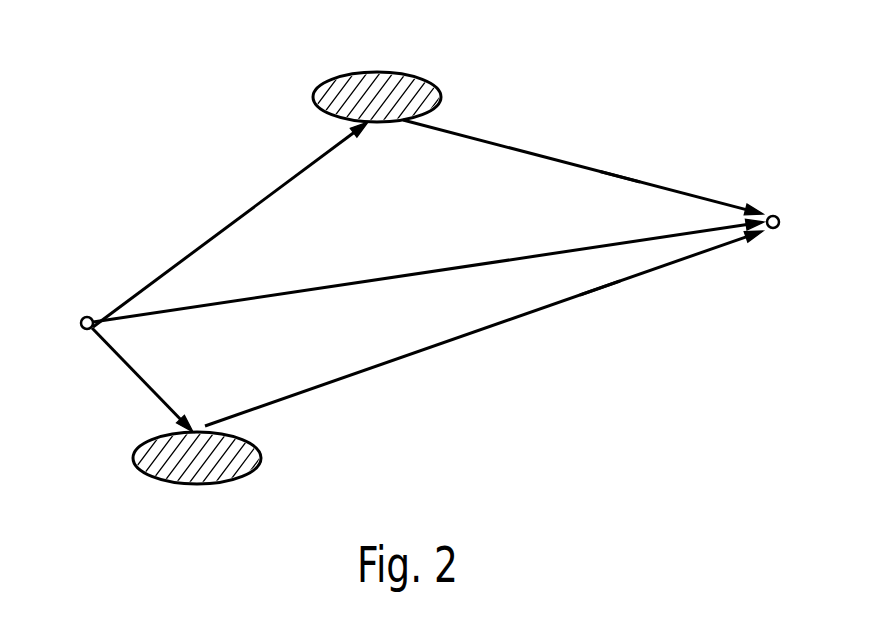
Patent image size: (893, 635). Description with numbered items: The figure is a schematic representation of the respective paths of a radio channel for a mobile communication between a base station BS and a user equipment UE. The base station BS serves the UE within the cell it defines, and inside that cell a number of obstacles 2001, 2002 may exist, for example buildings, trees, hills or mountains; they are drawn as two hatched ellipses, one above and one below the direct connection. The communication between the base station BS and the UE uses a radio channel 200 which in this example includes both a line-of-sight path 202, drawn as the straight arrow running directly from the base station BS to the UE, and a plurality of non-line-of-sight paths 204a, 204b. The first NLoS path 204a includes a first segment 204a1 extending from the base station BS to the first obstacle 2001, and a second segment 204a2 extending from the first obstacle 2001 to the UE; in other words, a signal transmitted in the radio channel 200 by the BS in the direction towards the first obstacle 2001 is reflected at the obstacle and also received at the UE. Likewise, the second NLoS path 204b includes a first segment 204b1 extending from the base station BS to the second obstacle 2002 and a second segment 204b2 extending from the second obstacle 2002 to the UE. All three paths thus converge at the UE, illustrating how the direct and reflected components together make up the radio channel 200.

The radio channel 200 is at (380, 244).
The first obstacle 2001 is at (377, 72).
The second obstacle 2002 is at (262, 455).
The LoS path 202 is at (470, 262).
The first NLoS path 204a is at (527, 143).
The first segment of first NLoS path 204a1 is at (233, 220).
The second segment of first NLoS path 204a2 is at (620, 177).
The second NLoS path 204b is at (451, 351).
The first segment of second NLoS path 204b1 is at (130, 367).
The second segment of second NLoS path 204b2 is at (600, 290).
The base station BS is at (66, 324).
The user equipment UE is at (776, 245).